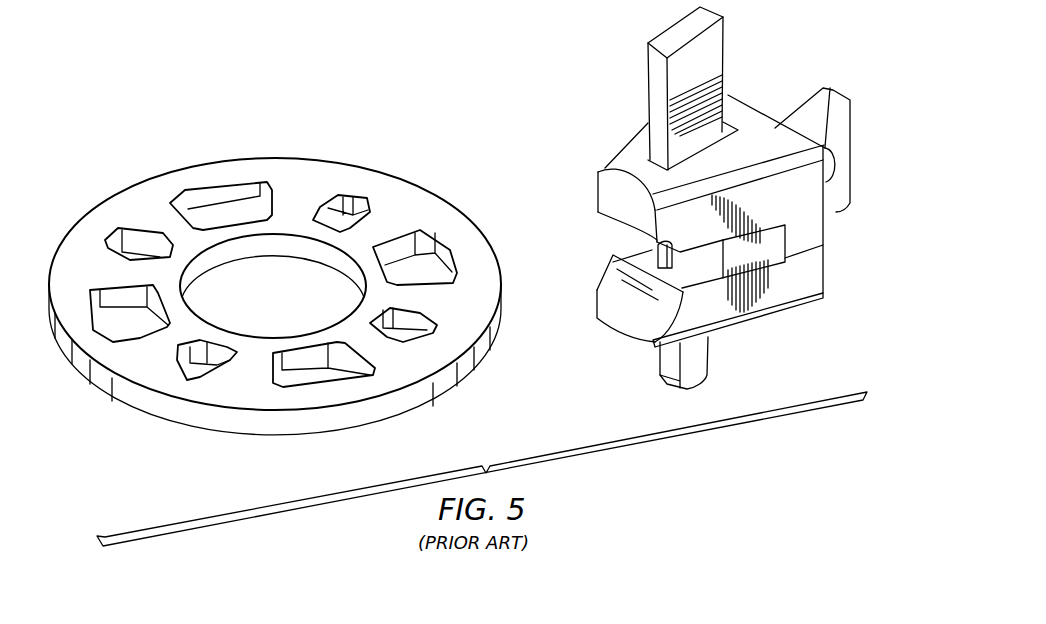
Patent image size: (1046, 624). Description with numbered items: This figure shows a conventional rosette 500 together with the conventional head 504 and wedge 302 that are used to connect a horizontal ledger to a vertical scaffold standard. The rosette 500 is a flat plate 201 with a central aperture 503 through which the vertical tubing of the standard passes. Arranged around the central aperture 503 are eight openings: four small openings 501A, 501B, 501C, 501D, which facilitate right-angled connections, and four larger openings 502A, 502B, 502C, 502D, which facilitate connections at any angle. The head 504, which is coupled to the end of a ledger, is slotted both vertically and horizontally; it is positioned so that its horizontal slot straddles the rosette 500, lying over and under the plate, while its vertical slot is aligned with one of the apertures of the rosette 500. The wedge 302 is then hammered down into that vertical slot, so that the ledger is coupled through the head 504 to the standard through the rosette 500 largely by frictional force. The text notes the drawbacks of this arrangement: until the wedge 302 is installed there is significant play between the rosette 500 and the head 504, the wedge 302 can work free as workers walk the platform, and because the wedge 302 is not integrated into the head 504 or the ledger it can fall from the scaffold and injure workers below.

The rosette 500 is at (127, 113).
The disc plate 201 is at (287, 175).
The small opening 501A is at (432, 328).
The small opening 501B is at (198, 372).
The small opening 501C is at (140, 240).
The small opening 501D is at (330, 208).
The larger opening 502A is at (317, 378).
The larger opening 502B is at (122, 322).
The larger opening 502C is at (220, 200).
The larger opening 502D is at (400, 245).
The central aperture 503 is at (292, 302).
The wedge 302 is at (712, 52).
The slotted head 504 is at (638, 148).